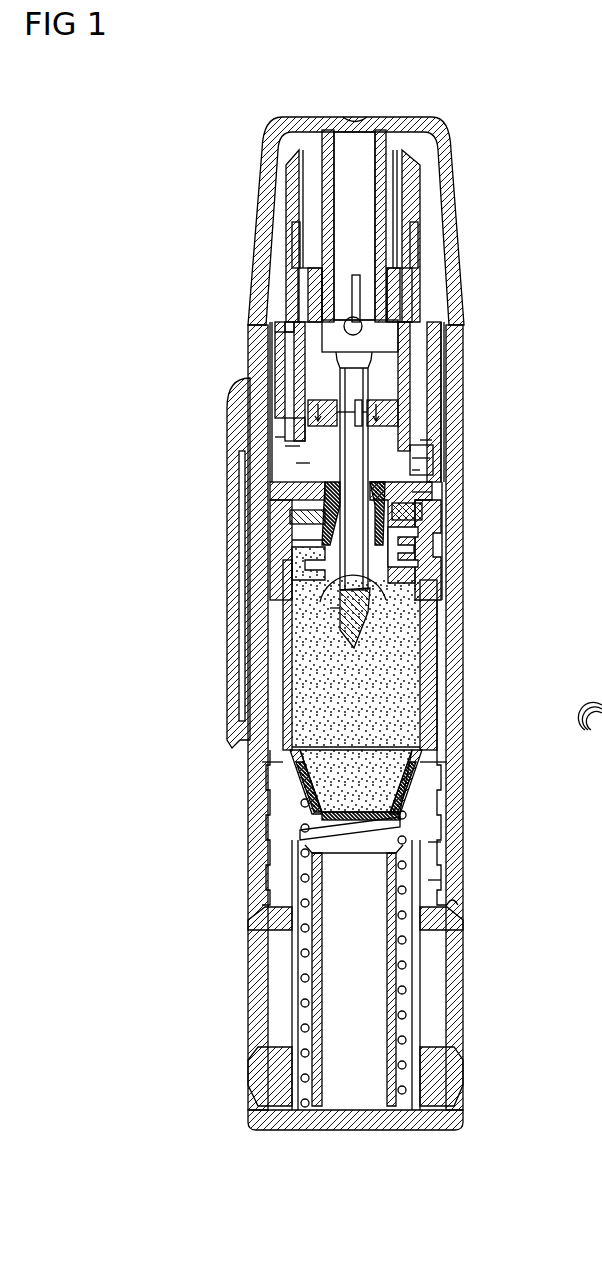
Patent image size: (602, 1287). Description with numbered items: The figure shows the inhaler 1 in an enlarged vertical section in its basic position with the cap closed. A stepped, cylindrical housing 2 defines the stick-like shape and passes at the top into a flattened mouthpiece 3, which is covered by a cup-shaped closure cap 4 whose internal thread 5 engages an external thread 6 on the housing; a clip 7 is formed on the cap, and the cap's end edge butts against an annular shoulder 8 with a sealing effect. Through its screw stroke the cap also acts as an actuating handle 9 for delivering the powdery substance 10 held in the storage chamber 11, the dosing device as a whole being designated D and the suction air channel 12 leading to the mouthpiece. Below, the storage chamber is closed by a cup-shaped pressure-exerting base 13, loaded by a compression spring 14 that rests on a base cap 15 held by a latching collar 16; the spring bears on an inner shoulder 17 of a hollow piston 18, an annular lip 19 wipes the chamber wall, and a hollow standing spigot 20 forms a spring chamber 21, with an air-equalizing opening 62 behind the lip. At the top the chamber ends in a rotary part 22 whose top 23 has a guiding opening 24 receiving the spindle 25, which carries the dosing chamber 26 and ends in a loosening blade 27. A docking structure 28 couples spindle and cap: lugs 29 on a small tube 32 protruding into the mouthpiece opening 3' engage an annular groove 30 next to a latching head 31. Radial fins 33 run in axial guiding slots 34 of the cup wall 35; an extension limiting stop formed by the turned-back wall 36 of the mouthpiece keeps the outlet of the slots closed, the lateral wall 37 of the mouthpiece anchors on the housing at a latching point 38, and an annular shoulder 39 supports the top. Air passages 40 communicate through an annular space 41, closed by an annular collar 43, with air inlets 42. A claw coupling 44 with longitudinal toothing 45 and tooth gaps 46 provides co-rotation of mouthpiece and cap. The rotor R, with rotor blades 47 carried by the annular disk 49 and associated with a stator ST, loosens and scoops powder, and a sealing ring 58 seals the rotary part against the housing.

The inhaler 1 is at (470, 132).
The housing 2 is at (432, 676).
The mouthpiece 3 is at (374, 205).
The mouthpiece opening 3' is at (408, 169).
The closure cap 4 is at (283, 128).
The internal thread 5 is at (447, 812).
The external thread 6 is at (444, 880).
The clip 7 is at (238, 660).
The annular shoulder 8 is at (458, 905).
The actuating handle 9 is at (463, 304).
The powdery substance 10 is at (330, 688).
The storage chamber 11 is at (296, 725).
The suction air channel 12 is at (332, 386).
The pressure-exerting base 13 is at (302, 792).
The compression spring 14 is at (306, 953).
The base cap 15 is at (345, 1133).
The latching collar 16 is at (262, 1077).
The inner shoulder 17 is at (310, 815).
The hollow piston 18 is at (300, 1000).
The annular lip 19 is at (428, 762).
The standing spigot 20 is at (396, 980).
The spring chamber 21 is at (300, 1040).
The rotary part 22 is at (262, 491).
The top 23 is at (292, 518).
The guiding opening 24 is at (338, 578).
The spindle 25 is at (285, 417).
The dosing chamber 26 is at (342, 606).
The blade 27 is at (385, 645).
The docking structure 28 is at (325, 368).
The lugs 29 is at (342, 318).
The annular groove 30 is at (375, 300).
The latching head 31 is at (356, 318).
The small tube 32 is at (326, 158).
The radial fins 33 is at (315, 415).
The axial guiding slots 34 is at (295, 262).
The cup wall 35 is at (432, 393).
The cap rib 36 is at (432, 250).
The lateral wall 37 is at (438, 215).
The latching point 38 is at (440, 522).
The annular shoulder 39 is at (420, 470).
The air passage 40 is at (304, 463).
The annular space 41 is at (292, 446).
The air inlets 42 is at (275, 437).
The annular collar 43 is at (432, 418).
The claw coupling 44 is at (306, 335).
The longitudinal toothing 45 is at (440, 332).
The tooth gaps 46 is at (440, 262).
The rotor blades 47 is at (432, 642).
The annular disk 49 is at (296, 558).
The sealing ring 58 is at (298, 545).
The air-equalizing opening 62 is at (440, 844).
The dosing device D is at (392, 383).
The rotor R is at (438, 605).
The stator ST is at (428, 568).